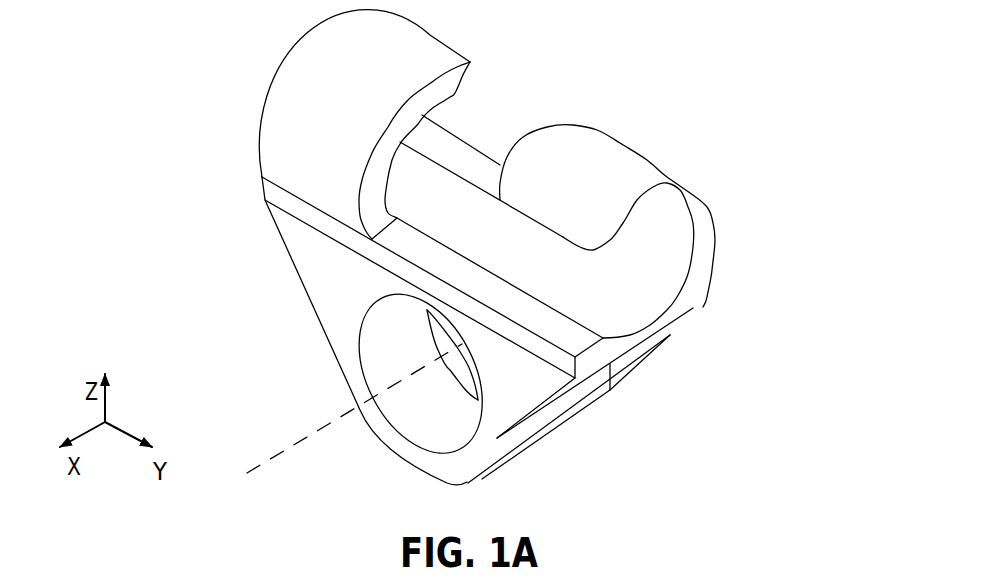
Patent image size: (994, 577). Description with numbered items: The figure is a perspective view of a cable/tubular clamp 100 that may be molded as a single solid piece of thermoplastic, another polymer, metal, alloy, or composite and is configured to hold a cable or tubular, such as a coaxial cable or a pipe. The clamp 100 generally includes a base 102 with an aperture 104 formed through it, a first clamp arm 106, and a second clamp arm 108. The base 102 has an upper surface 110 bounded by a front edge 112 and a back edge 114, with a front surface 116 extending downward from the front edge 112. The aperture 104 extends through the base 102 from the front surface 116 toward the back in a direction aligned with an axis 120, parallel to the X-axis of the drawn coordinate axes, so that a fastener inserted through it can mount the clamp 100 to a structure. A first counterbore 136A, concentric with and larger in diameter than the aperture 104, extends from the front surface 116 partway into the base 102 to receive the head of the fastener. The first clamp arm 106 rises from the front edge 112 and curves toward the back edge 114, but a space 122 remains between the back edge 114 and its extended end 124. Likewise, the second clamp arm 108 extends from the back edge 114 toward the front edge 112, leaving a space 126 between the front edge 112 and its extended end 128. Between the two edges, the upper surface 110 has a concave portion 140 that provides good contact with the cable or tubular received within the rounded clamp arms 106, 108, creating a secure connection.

The cable/tubular clamp 100 is at (586, 19).
The base 102 is at (292, 298).
The aperture 104 is at (453, 355).
The first clamp arm 106 is at (330, 63).
The second clamp arm 108 is at (627, 170).
The upper surface 110 is at (440, 186).
The front edge 112 is at (372, 241).
The back edge 114 is at (482, 160).
The front surface 116 is at (500, 410).
The axis 120 is at (313, 437).
The space 122 is at (447, 111).
The extended end 124 is at (422, 36).
The space 126 is at (604, 285).
The extended end 128 is at (563, 237).
The first counterbore 136A is at (398, 330).
The concave portion 140 is at (447, 217).